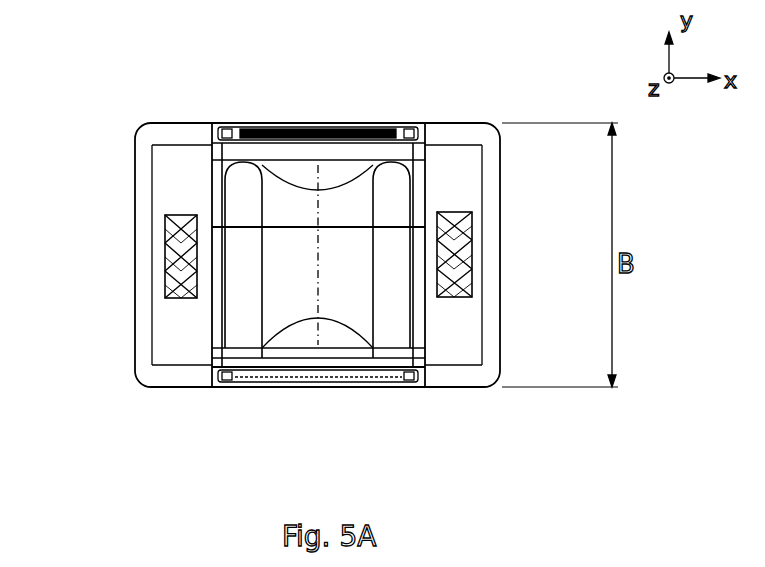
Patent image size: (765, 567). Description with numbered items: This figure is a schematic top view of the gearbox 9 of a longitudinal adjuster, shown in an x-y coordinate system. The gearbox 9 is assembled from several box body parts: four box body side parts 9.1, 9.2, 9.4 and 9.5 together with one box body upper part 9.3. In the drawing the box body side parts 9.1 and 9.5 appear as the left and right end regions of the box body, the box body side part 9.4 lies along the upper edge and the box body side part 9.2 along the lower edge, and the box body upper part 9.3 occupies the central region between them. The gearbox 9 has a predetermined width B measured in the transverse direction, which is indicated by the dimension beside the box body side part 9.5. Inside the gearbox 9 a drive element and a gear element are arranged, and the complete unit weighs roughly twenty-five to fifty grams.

The gearbox 9 is at (445, 110).
The box body side part 9.1 is at (134, 262).
The box body side part 9.2 is at (323, 387).
The box body upper part 9.3 is at (290, 207).
The box body side part 9.4 is at (312, 122).
The box body side part 9.5 is at (502, 248).